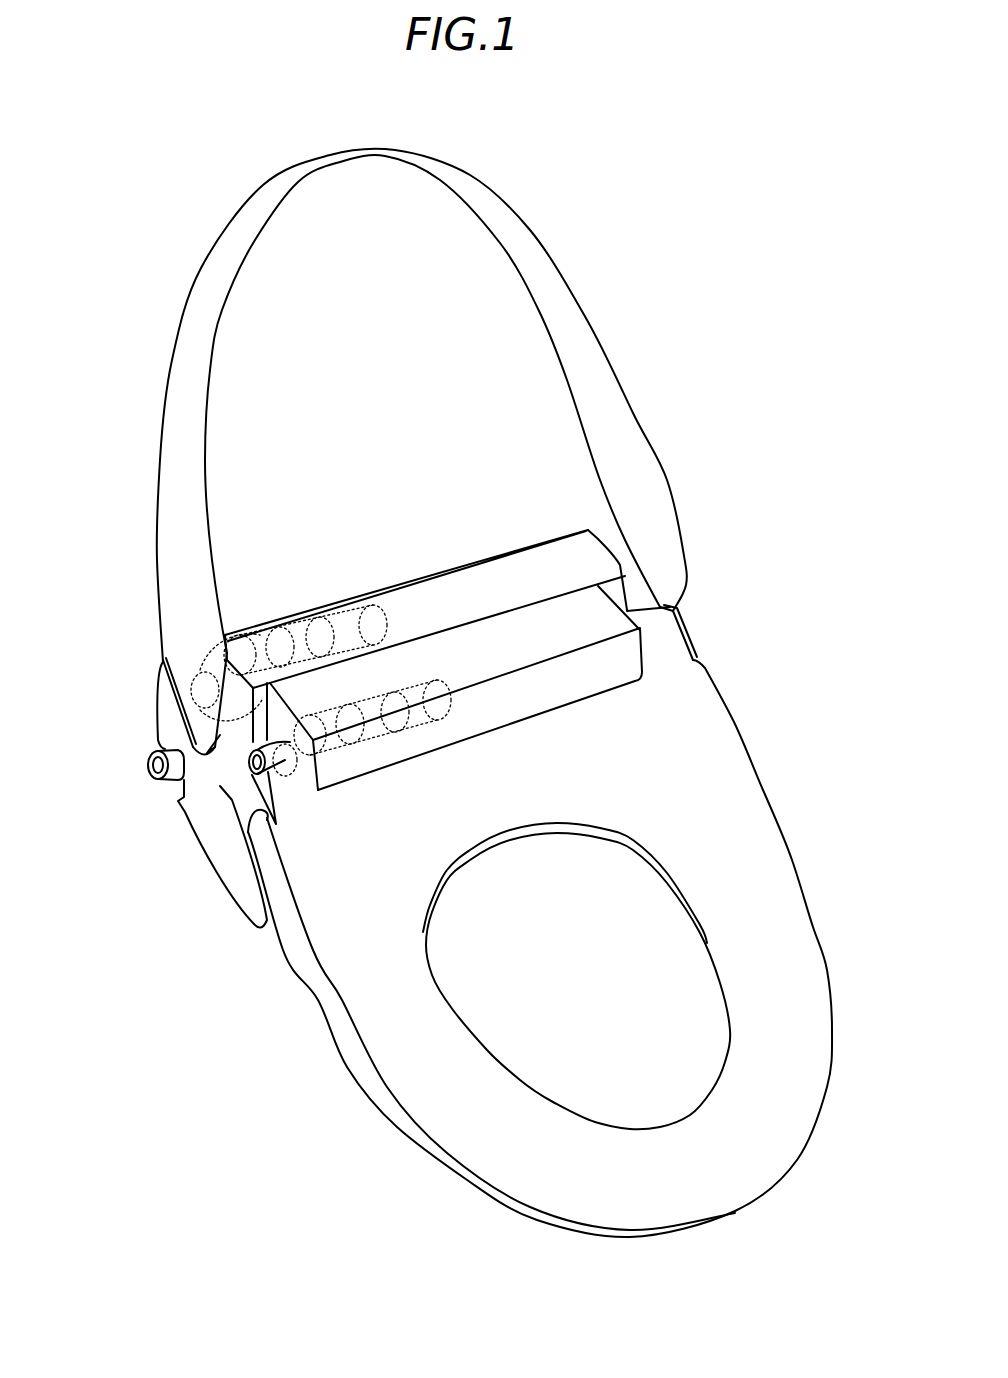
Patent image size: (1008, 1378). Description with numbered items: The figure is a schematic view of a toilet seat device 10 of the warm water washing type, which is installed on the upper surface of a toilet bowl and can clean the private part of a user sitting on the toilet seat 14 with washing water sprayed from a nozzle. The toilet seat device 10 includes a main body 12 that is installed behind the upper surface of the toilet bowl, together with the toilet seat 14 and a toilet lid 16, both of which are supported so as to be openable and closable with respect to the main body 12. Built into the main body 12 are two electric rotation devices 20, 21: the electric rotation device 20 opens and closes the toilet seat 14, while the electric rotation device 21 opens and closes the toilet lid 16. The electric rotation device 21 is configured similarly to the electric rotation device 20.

The toilet seat device 10 is at (559, 181).
The main body 12 is at (193, 812).
The toilet seat 14 is at (763, 790).
The toilet lid 16 is at (176, 333).
The electric rotation device 20 is at (330, 765).
The electric rotation device 21 is at (258, 624).